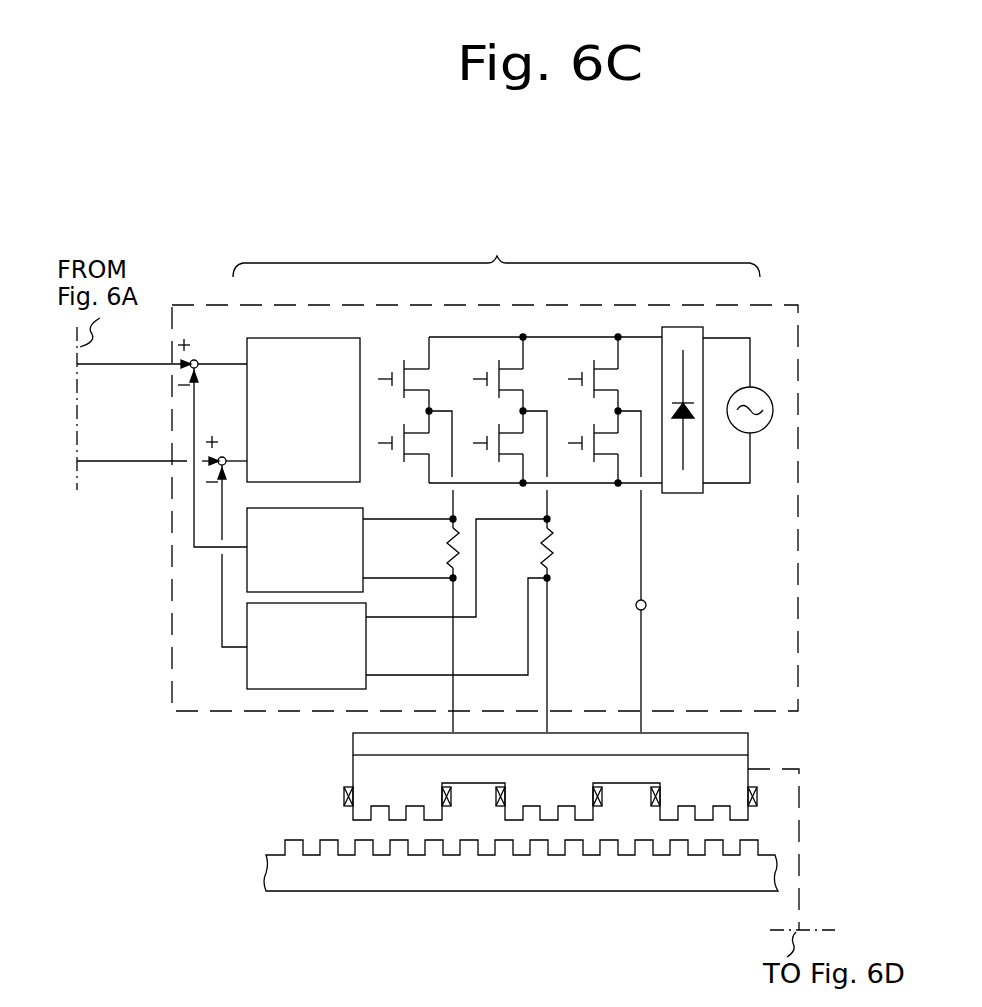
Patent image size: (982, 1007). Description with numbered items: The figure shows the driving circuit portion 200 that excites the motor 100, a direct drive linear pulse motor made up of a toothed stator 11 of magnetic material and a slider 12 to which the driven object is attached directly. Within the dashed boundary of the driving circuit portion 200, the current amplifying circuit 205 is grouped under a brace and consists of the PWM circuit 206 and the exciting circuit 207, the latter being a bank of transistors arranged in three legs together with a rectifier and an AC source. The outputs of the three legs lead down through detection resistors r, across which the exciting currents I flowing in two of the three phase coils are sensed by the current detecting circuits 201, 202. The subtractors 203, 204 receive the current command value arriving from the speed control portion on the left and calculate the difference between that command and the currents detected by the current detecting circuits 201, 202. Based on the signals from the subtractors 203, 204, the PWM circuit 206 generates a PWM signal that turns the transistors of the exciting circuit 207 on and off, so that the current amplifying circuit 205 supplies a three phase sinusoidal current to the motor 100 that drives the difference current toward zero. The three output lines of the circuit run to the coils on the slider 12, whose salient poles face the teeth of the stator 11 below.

The driving circuit portion 200 is at (774, 712).
The current amplifying circuit 205 is at (496, 251).
The PWM circuit 206 is at (303, 338).
The exciting circuit 207 is at (562, 335).
The subtractor 203 is at (197, 360).
The subtractor 204 is at (222, 457).
The current detecting circuit 201 is at (343, 505).
The current detecting circuit 202 is at (348, 681).
The detection resistor r is at (450, 548).
The current I is at (455, 500).
The slider 12 is at (353, 742).
The motor 100 is at (327, 818).
The stator 11 is at (266, 870).